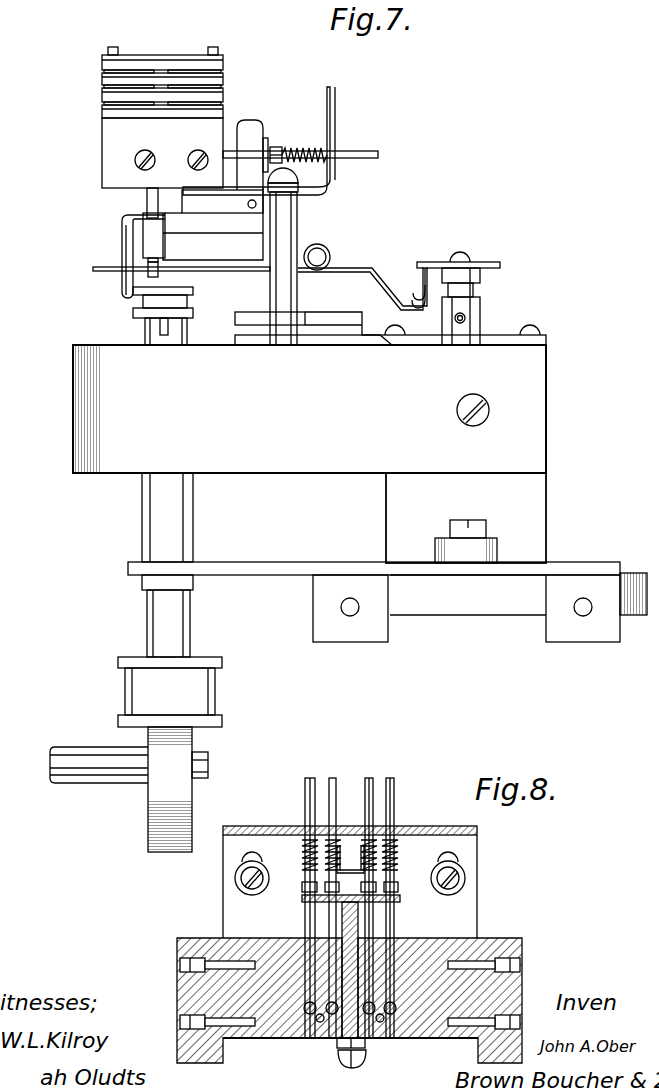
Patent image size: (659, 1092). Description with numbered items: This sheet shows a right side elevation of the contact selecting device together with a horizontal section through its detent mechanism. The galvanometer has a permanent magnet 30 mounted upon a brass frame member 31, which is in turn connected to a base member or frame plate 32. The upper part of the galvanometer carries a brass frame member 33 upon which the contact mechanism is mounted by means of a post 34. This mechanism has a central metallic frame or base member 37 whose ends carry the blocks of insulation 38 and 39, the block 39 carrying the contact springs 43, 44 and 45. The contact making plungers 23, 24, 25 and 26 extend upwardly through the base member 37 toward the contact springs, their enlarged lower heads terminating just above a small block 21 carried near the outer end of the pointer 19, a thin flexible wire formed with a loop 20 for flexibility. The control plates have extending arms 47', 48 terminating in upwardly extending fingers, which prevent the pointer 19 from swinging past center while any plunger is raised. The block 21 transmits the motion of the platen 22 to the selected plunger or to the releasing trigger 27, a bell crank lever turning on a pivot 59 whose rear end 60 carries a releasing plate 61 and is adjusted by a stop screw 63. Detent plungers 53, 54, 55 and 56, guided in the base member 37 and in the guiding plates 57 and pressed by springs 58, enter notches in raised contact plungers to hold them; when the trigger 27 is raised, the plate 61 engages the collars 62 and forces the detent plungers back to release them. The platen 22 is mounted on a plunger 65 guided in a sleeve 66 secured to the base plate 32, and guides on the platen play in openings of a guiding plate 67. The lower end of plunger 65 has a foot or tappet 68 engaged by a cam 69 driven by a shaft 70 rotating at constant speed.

In FIG. 7, the contact spring 43 is at (150, 70).
In FIG. 7, the contact spring 44 is at (160, 88).
In FIG. 7, the contact spring 45 is at (150, 100).
In FIG. 7, the block of insulation 39 is at (118, 136).
In FIG. 8, the block of insulation 39 is at (510, 940).
In FIG. 7, the rear end of trigger 60 is at (248, 128).
In FIG. 8, the rear end of trigger 60 is at (345, 910).
In FIG. 7, the releasing plate 61 is at (263, 150).
In FIG. 8, the releasing plate 61 is at (303, 898).
In FIG. 7, the shoulder or collar 62 is at (276, 147).
In FIG. 8, the shoulder or collar 62 is at (305, 884).
In FIG. 7, the spring 58 is at (300, 147).
In FIG. 8, the spring 58 is at (362, 840).
In FIG. 7, the guiding plate 57 is at (337, 112).
In FIG. 8, the guiding plate 57 is at (425, 828).
In FIG. 7, the detent plunger 56 is at (357, 153).
In FIG. 8, the detent plunger 56 is at (392, 778).
In FIG. 8, the detent plunger 55 is at (369, 778).
In FIG. 8, the detent plunger 54 is at (332, 778).
In FIG. 8, the detent plunger 53 is at (308, 778).
In FIG. 7, the post 34 is at (298, 232).
In FIG. 7, the contact making plunger 26 is at (147, 200).
In FIG. 8, the contact making plunger 26 is at (394, 1014).
In FIG. 7, the pivot of trigger 59 is at (250, 206).
In FIG. 7, the releasing trigger 27 is at (220, 248).
In FIG. 7, the platen 22 is at (142, 290).
In FIG. 7, the wire hook 47' is at (117, 256).
In FIG. 7, the extending arm 48 is at (122, 257).
In FIG. 7, the block 21 is at (145, 272).
In FIG. 7, the guiding plate 67 is at (140, 315).
In FIG. 7, the sleeve 66 is at (168, 326).
In FIG. 7, the loop 20 is at (327, 258).
In FIG. 7, the pointer 19 is at (362, 263).
In FIG. 7, the brass frame member 33 is at (328, 330).
In FIG. 7, the permanent magnet 30 is at (520, 405).
In FIG. 7, the brass frame member 31 is at (533, 508).
In FIG. 7, the base member or frame plate 32 is at (328, 563).
In FIG. 7, the plunger 65 is at (160, 618).
In FIG. 7, the foot or tappet 68 is at (225, 660).
In FIG. 7, the cam 69 is at (165, 735).
In FIG. 7, the shaft 70 is at (75, 752).
In FIG. 8, the block of insulation 38 is at (187, 938).
In FIG. 8, the central metallic frame or base member 37 is at (265, 1040).
In FIG. 8, the contact making plunger 23 is at (306, 1015).
In FIG. 8, the contact making plunger 24 is at (328, 1015).
In FIG. 8, the contact making plunger 25 is at (372, 1015).
In FIG. 8, the stop screw 63 is at (354, 1066).